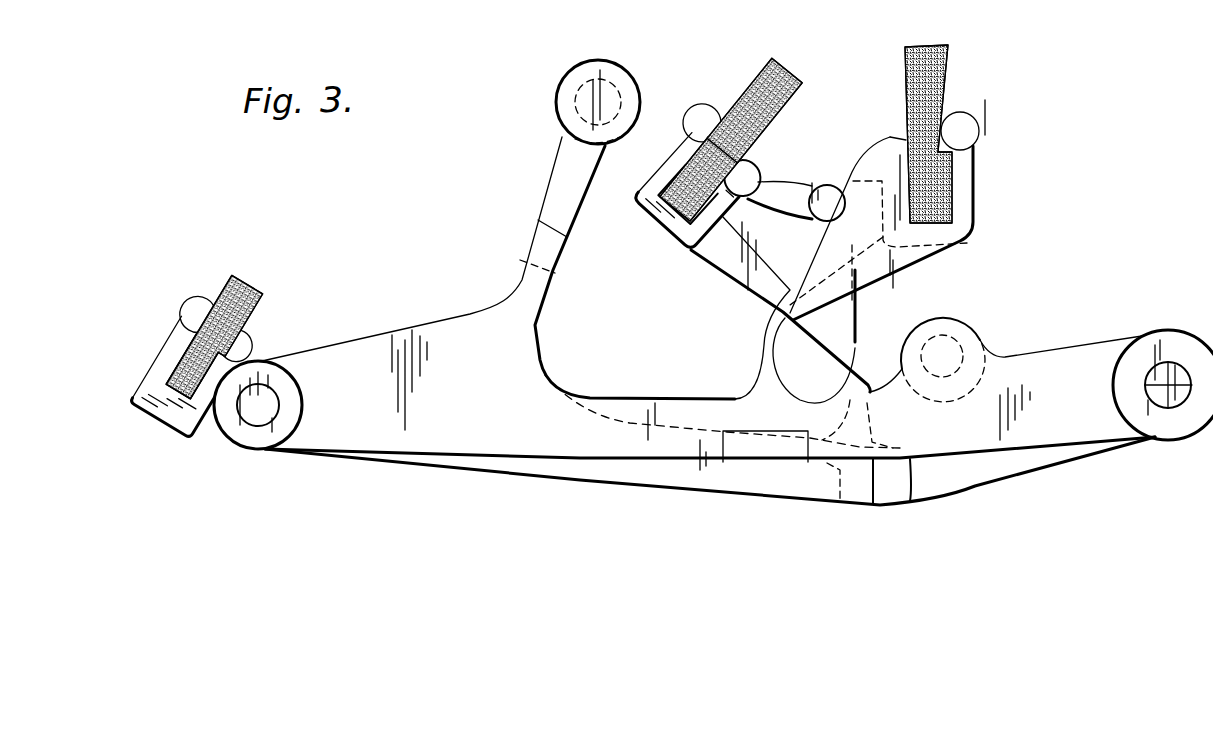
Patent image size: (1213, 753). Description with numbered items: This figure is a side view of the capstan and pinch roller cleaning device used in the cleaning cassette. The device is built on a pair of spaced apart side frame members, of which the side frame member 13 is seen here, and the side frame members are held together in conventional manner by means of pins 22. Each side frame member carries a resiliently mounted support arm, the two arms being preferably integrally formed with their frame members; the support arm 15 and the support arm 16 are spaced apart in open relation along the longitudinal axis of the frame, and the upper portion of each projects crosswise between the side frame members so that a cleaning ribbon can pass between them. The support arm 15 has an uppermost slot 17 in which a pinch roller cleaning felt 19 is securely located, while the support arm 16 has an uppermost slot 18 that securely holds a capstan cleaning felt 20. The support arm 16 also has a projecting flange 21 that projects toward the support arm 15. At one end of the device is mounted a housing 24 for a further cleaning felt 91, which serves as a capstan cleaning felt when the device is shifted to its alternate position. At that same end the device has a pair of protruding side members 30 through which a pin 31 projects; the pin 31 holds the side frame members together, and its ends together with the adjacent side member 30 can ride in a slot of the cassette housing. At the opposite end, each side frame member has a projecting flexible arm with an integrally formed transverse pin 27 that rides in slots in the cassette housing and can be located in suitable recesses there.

The side frame member 13 is at (642, 448).
The support arm 15 is at (898, 271).
The support arm 16 is at (743, 260).
The uppermost slot 17 is at (952, 168).
The uppermost slot 18 is at (690, 148).
The pinch roller cleaning felt 19 is at (947, 68).
The capstan cleaning felt 20 is at (787, 62).
The projecting flange 21 is at (792, 193).
The pin 22 is at (945, 350).
The housing 24 is at (192, 420).
The transverse pin 27 is at (1173, 338).
The protruding side member 30 is at (283, 420).
The pin 31 is at (258, 410).
The cleaning felt 91 is at (243, 280).